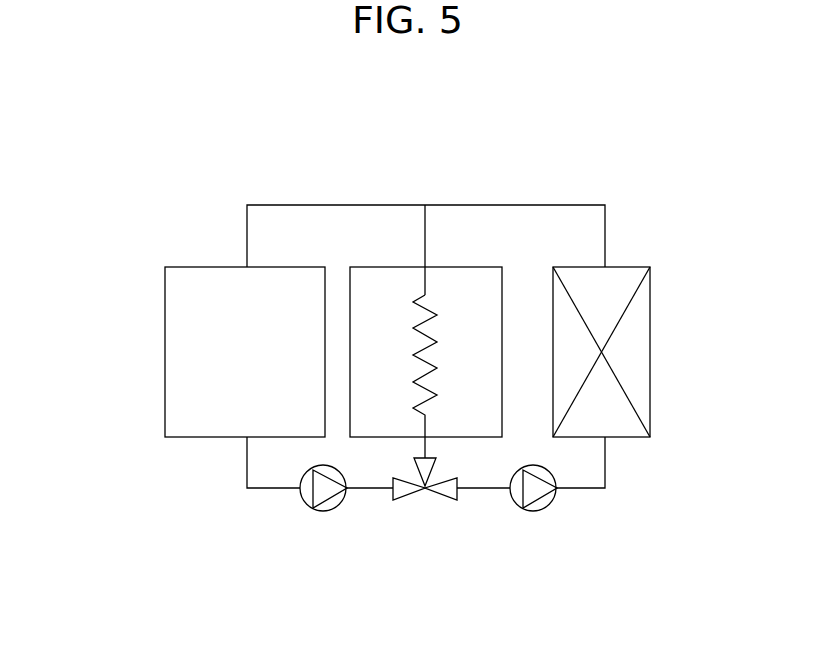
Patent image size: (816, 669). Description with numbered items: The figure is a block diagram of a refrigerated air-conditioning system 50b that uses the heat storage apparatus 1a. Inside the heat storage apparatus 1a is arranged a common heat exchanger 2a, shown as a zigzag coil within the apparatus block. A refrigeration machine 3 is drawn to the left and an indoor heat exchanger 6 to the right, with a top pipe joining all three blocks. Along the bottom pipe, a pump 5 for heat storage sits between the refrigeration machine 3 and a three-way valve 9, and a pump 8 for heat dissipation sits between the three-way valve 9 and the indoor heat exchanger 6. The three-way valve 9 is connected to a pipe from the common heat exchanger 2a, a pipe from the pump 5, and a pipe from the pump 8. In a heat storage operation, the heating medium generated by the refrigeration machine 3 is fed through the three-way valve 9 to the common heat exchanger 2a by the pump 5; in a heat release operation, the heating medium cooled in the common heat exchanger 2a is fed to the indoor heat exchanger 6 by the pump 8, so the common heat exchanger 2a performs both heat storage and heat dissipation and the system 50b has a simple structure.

The refrigerated air-conditioning system 50b is at (574, 128).
The heat storage apparatus 1a is at (388, 266).
The common heat exchanger 2a is at (441, 310).
The refrigeration machine 3 is at (165, 333).
The pump for heat storage 5 is at (322, 511).
The indoor heat exchanger 6 is at (635, 349).
The pump for heat dissipation 8 is at (530, 511).
The three-way valve 9 is at (413, 501).